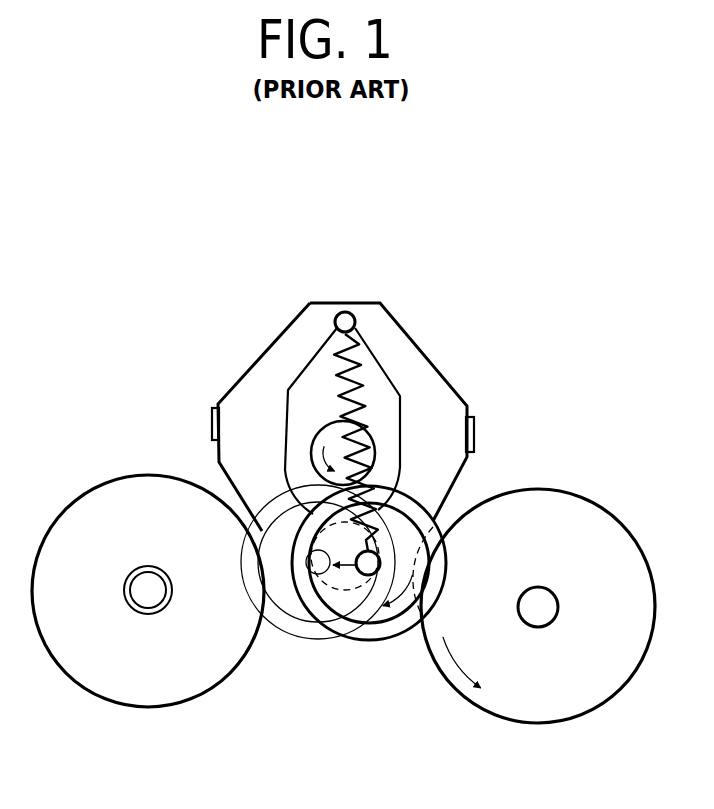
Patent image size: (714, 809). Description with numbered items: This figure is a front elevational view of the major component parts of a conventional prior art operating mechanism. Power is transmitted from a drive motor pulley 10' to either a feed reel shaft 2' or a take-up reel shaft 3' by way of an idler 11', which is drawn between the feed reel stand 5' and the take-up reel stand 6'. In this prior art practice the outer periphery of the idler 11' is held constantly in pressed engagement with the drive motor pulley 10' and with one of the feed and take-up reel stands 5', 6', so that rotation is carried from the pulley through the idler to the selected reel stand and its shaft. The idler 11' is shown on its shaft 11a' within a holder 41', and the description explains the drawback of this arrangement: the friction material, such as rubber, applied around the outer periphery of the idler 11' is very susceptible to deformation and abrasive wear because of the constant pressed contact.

The swing arm / holder 41' is at (363, 412).
The drive motor pulley 10' is at (336, 436).
The idler 11' is at (343, 587).
The roller shaft 11a' is at (370, 630).
The feed reel shaft 2' is at (162, 569).
The take-up reel shaft 3' is at (559, 596).
The feed reel stand 5' is at (148, 614).
The take-up reel stand 6' is at (534, 624).